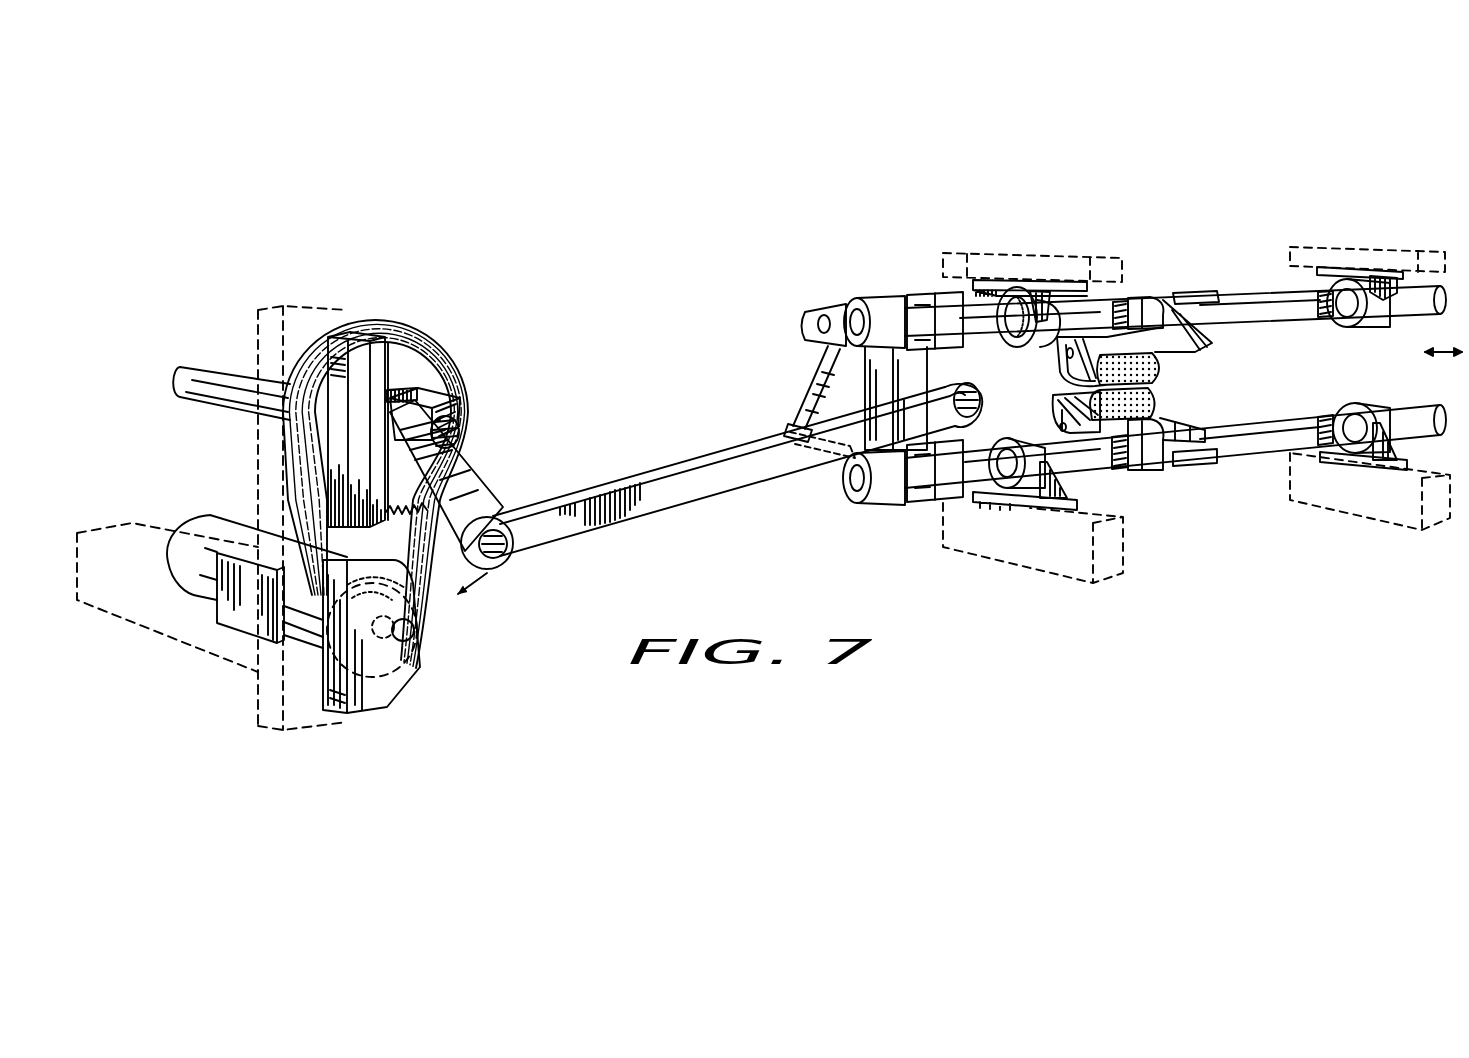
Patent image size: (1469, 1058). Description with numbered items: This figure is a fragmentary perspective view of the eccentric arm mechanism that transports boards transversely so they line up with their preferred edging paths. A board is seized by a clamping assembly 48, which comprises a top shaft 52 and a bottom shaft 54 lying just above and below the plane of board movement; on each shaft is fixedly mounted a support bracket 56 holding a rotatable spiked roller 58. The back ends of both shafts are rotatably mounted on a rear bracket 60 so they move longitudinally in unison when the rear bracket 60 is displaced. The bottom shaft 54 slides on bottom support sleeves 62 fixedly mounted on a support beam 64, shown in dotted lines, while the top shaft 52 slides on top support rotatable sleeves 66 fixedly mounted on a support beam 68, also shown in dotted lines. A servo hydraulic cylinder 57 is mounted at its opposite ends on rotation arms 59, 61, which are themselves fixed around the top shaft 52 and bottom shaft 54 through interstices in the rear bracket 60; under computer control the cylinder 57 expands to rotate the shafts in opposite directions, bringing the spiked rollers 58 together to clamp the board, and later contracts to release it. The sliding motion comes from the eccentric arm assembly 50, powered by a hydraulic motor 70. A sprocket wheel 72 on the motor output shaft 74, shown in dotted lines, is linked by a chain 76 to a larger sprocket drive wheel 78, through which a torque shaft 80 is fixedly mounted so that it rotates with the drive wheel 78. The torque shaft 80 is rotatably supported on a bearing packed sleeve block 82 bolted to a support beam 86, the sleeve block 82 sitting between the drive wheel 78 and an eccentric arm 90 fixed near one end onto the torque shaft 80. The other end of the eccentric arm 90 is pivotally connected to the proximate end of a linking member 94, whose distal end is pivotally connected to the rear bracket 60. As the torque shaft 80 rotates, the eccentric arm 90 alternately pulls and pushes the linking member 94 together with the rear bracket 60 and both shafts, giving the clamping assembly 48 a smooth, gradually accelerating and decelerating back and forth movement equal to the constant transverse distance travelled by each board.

The clamping assembly 48 is at (1282, 218).
The eccentric arm assembly 50 is at (606, 358).
The top shaft 52 is at (1238, 304).
The bottom shaft 54 is at (1130, 470).
The support bracket 56 is at (1185, 290).
The hydraulic cylinder 57 is at (800, 392).
The spiked roller 58 is at (1170, 372).
The rotation arm 59 is at (802, 326).
The rear bracket 60 is at (940, 356).
The rotation arm 61 is at (836, 466).
The bottom support sleeve 62 is at (1022, 508).
The support beam 64 is at (1123, 560).
The top support rotatable sleeve 66 is at (1050, 282).
The support beam 68 is at (925, 268).
The hydraulic motor 70 is at (203, 588).
The sprocket wheel 72 is at (415, 675).
The output shaft 74 is at (414, 630).
The chain 76 is at (432, 336).
The sprocket drive wheel 78 is at (318, 428).
The torque shaft 80 is at (199, 378).
The sleeve block 82 is at (405, 386).
The support beam 86 is at (370, 360).
The eccentric arm 90 is at (480, 485).
The linking member 94 is at (625, 492).